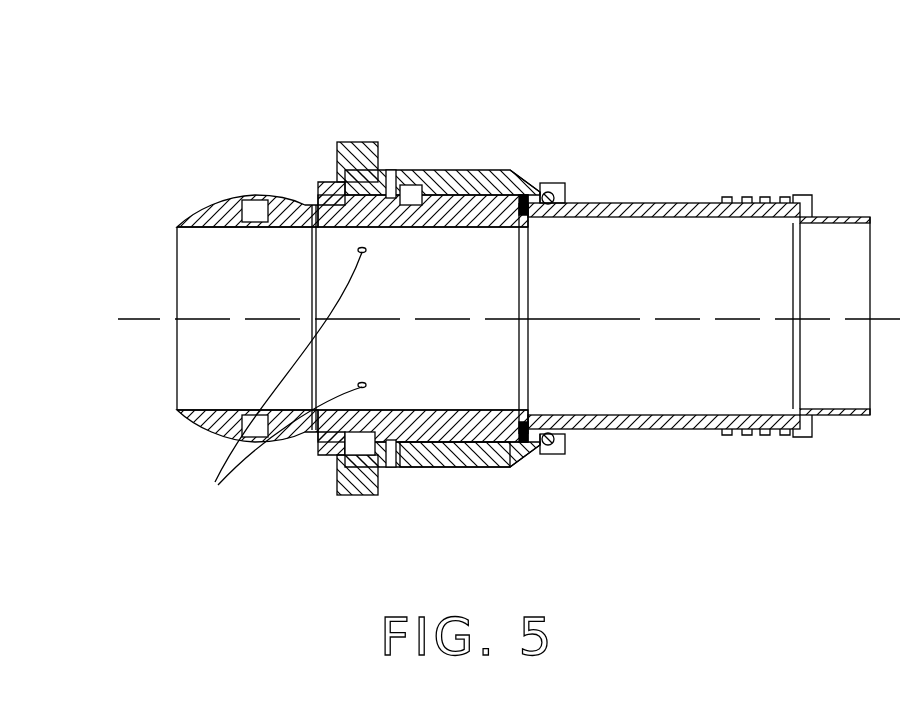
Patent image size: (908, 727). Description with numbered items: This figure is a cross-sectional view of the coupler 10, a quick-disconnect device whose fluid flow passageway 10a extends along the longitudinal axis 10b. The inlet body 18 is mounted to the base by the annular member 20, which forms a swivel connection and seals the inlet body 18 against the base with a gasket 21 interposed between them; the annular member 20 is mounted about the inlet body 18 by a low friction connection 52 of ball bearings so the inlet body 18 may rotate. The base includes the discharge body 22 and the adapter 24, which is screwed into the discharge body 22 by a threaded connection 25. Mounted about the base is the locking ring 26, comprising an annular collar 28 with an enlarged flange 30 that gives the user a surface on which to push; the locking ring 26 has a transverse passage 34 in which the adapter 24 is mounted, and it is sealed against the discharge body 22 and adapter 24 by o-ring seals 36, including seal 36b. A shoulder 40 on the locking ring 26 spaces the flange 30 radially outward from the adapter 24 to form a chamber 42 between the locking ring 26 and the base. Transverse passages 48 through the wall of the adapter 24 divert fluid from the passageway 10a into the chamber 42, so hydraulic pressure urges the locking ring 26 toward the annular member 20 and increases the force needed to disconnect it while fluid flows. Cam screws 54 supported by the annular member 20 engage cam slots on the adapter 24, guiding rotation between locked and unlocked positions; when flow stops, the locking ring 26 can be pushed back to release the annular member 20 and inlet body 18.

The coupler 10 is at (788, 155).
The passageway 10a is at (200, 378).
The longitudinal axis 10b is at (150, 318).
The inlet body 18 is at (660, 203).
The annular member 20 is at (517, 175).
The gasket 21 is at (530, 201).
The discharge body 22 is at (205, 203).
The adapter 24 is at (470, 440).
The threaded connection 25 is at (325, 210).
The locking ring 26 is at (357, 140).
The annular collar 28 is at (405, 195).
The enlarged flange 30 is at (350, 498).
The transverse passage 34 is at (462, 200).
The seals 36 is at (338, 180).
The seal 36b is at (408, 192).
The shoulder 40 is at (388, 455).
The chamber 42 is at (345, 455).
The transverse passages 48 is at (277, 377).
The low friction connection 52 is at (555, 443).
The cam screws 54 is at (395, 170).